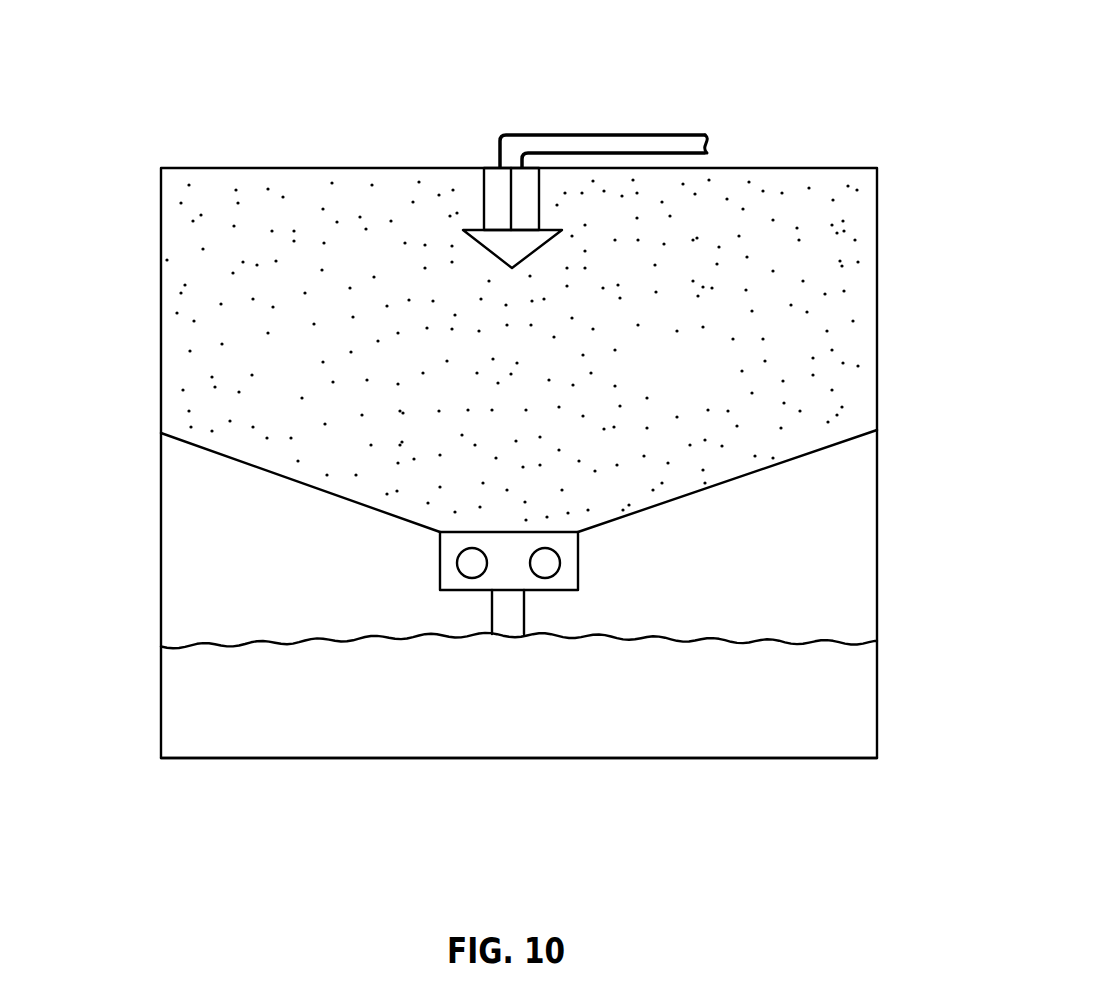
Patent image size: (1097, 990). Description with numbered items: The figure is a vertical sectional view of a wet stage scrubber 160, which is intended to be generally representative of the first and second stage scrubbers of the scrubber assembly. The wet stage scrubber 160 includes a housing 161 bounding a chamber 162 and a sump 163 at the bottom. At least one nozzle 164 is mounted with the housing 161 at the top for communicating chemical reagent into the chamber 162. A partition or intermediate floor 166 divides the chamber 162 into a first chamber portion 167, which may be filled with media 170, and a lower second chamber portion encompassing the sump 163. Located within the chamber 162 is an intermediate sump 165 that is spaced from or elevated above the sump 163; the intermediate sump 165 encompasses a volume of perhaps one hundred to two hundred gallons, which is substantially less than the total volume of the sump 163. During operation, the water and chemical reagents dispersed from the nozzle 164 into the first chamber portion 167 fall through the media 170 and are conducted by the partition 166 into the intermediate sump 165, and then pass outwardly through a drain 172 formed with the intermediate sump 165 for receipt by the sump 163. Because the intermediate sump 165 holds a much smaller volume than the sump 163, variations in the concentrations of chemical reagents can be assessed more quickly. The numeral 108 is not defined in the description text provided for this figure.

The liquid 108 is at (814, 601).
The wet stage scrubber 160 is at (703, 113).
The housing 161 is at (161, 277).
The chamber 162 is at (732, 389).
The sump 163 is at (650, 737).
The nozzle 164 is at (484, 200).
The intermediate sump 165 is at (568, 577).
The partition 166 is at (295, 481).
The first chamber portion 167 is at (290, 372).
The media 170 is at (850, 316).
The drain 172 is at (497, 611).